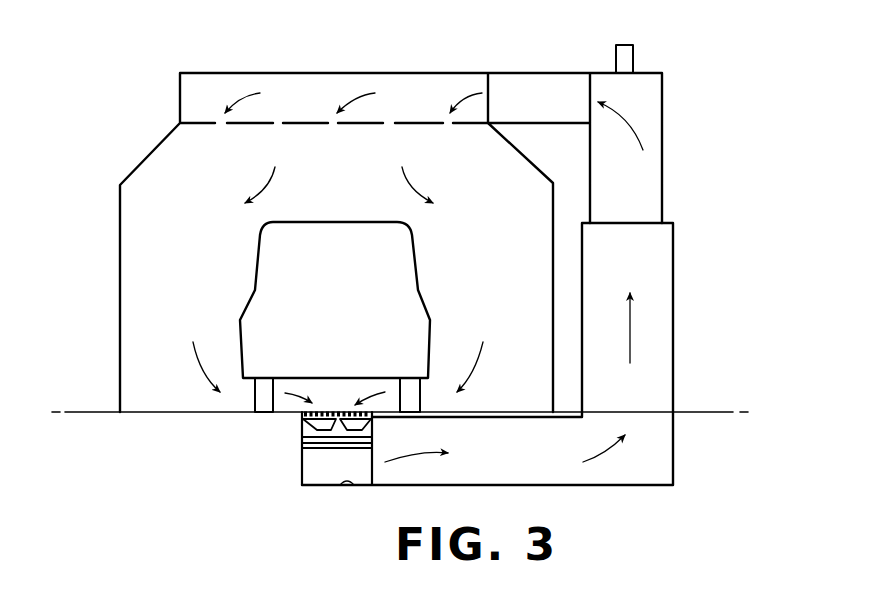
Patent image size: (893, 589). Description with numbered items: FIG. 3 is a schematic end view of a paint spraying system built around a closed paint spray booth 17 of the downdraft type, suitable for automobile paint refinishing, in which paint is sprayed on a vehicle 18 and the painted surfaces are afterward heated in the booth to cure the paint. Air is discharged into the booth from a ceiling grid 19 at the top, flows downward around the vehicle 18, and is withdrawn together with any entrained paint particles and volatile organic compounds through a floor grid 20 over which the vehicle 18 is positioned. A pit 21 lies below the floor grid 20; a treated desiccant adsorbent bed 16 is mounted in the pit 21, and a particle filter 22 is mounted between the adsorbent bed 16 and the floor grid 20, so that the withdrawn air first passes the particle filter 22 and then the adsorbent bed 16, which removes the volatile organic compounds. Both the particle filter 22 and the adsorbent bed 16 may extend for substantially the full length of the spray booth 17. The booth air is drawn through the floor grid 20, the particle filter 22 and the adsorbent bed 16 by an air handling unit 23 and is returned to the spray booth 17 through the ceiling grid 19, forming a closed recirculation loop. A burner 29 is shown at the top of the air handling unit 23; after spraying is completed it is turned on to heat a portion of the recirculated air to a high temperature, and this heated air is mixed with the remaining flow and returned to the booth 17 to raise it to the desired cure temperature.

The treated desiccant adsorbent bed 16 is at (325, 450).
The paint spray booth 17 is at (118, 282).
The vehicle 18 is at (412, 268).
The ceiling grid 19 is at (363, 125).
The floor grid 20 is at (332, 411).
The pit 21 is at (347, 480).
The particle filter 22 is at (302, 425).
The air handling unit 23 is at (673, 258).
The burner 29 is at (633, 50).